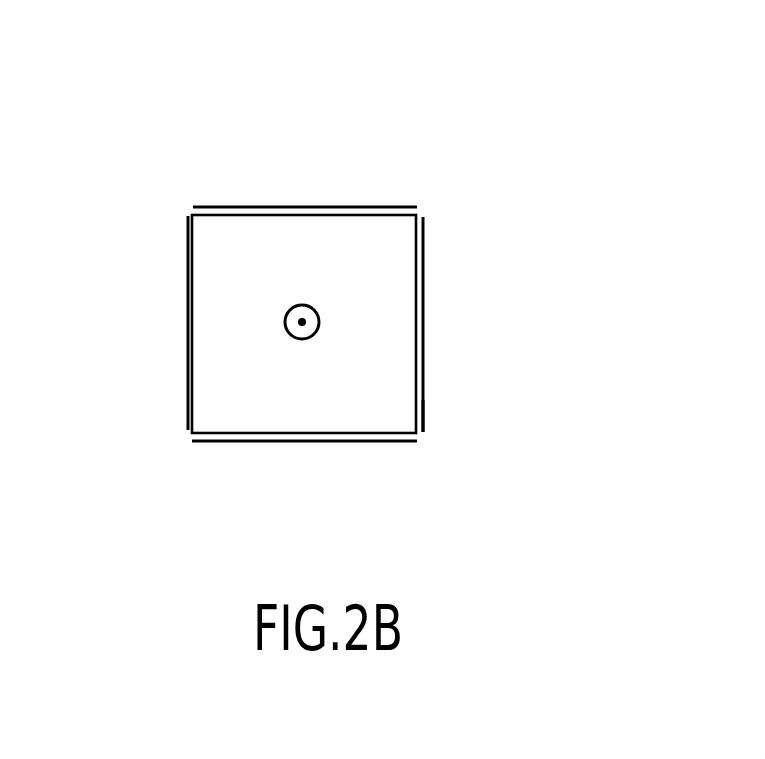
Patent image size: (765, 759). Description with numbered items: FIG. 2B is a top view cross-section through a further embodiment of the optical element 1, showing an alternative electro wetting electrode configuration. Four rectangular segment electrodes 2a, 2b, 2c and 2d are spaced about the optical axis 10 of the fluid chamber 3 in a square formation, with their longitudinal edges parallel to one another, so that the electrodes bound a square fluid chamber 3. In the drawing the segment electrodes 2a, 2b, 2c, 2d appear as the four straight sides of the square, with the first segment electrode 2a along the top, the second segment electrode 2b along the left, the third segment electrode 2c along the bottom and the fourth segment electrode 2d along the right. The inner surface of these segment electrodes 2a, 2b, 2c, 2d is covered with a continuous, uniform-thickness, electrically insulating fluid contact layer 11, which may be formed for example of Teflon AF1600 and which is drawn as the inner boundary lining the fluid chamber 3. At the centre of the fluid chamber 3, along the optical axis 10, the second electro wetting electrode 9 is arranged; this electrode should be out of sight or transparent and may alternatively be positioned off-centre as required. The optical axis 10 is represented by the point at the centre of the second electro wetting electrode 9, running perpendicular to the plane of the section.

The optical element 1 is at (251, 230).
The rectangular segment electrode 2a is at (315, 207).
The rectangular segment electrode 2b is at (183, 313).
The rectangular segment electrode 2c is at (220, 445).
The rectangular segment electrode 2d is at (425, 362).
The fluid chamber 3 is at (400, 257).
The second electro wetting electrode 9 is at (318, 331).
The optical axis 10 is at (306, 321).
The electrically insulating fluid contact layer 11 is at (425, 427).